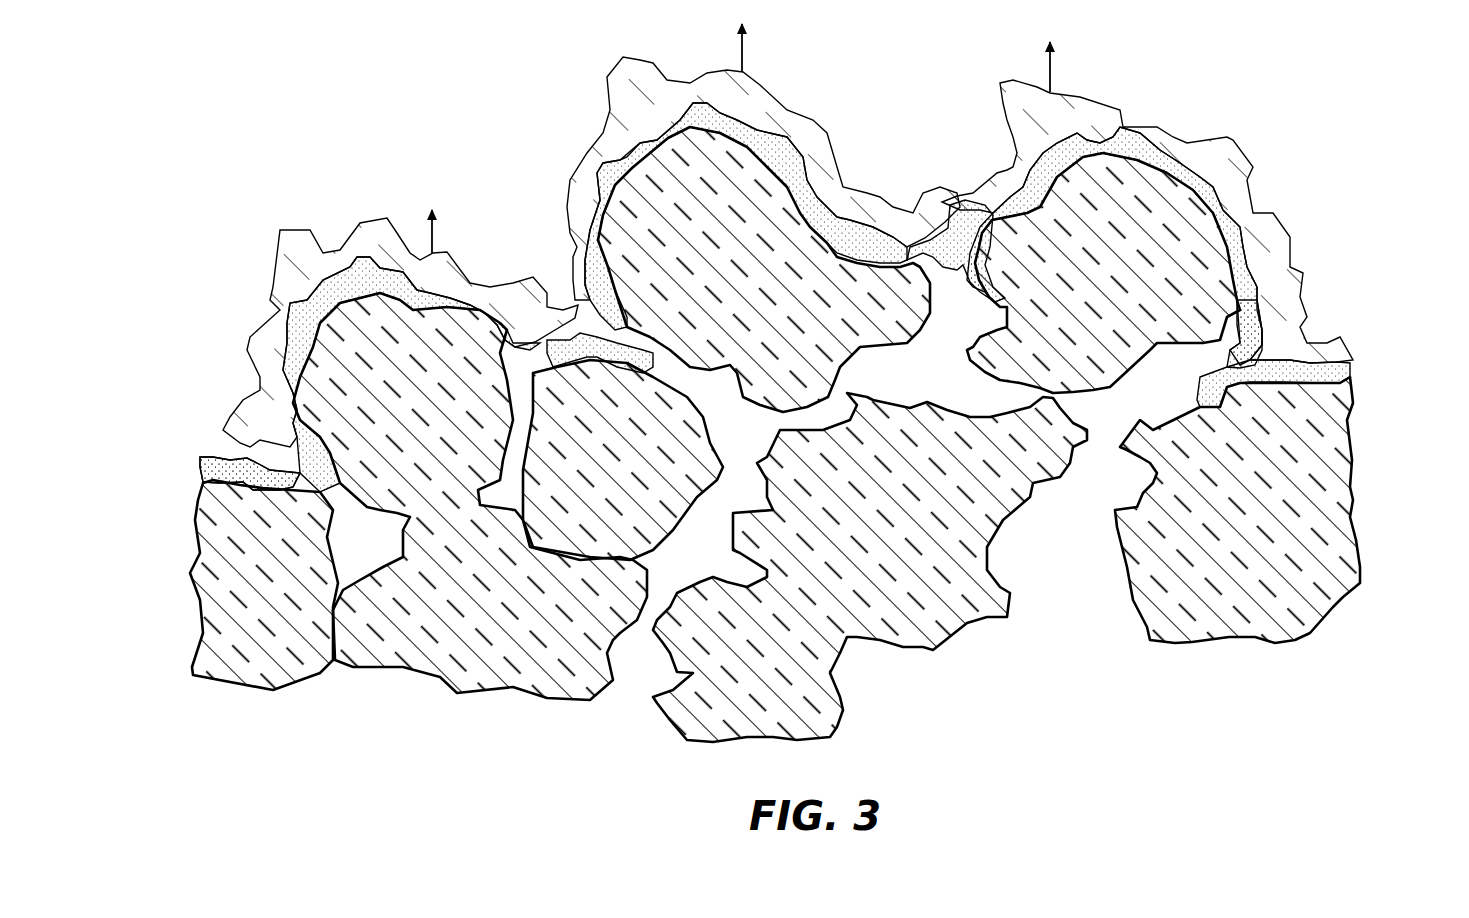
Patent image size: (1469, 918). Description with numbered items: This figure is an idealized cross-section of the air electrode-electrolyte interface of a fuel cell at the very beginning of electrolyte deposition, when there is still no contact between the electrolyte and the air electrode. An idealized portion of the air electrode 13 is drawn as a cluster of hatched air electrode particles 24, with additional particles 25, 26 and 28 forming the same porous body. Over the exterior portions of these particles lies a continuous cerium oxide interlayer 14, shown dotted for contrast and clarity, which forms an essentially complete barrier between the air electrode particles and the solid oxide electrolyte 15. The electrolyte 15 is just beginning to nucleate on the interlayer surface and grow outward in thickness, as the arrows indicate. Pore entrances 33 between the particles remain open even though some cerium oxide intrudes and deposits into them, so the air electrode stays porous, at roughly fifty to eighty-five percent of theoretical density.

The air electrode 13 is at (793, 381).
The cerium oxide interlayer 14 is at (203, 470).
The solid oxide electrolyte 15 is at (467, 253).
The air electrode particles 24 is at (1157, 600).
The mineral grain 25 is at (767, 203).
The mineral grain 26 is at (977, 303).
The mineral grain 28 is at (727, 433).
The pore entrances 33 is at (660, 347).